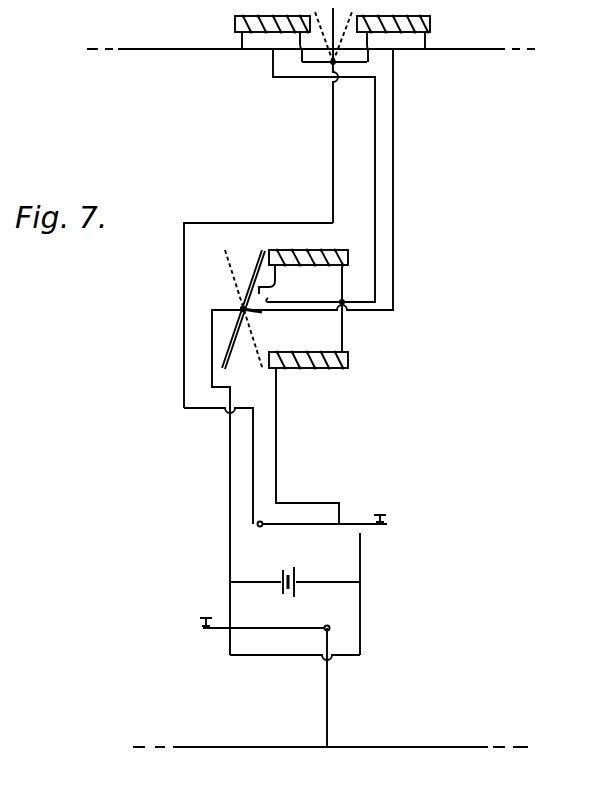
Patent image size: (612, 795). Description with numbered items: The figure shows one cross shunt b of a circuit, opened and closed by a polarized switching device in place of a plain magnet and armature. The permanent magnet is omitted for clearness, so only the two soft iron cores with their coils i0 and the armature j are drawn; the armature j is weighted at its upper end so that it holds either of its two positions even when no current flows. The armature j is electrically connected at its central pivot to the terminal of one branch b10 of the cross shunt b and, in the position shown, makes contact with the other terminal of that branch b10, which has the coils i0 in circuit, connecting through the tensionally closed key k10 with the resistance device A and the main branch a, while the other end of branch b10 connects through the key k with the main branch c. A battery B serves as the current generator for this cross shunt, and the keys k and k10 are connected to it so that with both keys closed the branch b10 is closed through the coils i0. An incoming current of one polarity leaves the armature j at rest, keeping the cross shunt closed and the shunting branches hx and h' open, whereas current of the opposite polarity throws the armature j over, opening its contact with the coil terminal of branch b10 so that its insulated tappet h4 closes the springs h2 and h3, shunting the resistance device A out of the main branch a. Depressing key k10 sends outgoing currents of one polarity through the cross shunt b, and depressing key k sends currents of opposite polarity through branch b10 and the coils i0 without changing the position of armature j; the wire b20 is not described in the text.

The resistance device A is at (300, 51).
The main branch a is at (487, 50).
The main branch c is at (435, 746).
The branch of cross shunt b10 is at (215, 477).
The shunting branch h' is at (342, 175).
The shunting branch hx is at (400, 148).
The coils i0 is at (281, 251).
The armature j is at (241, 307).
The spring h2 is at (356, 288).
The spring h3 is at (304, 317).
The insulated tappet h4 is at (263, 303).
The branch wire b20 is at (277, 484).
The key k10 is at (331, 585).
The battery B is at (281, 579).
The key k is at (227, 643).
The cross shunt b is at (325, 695).